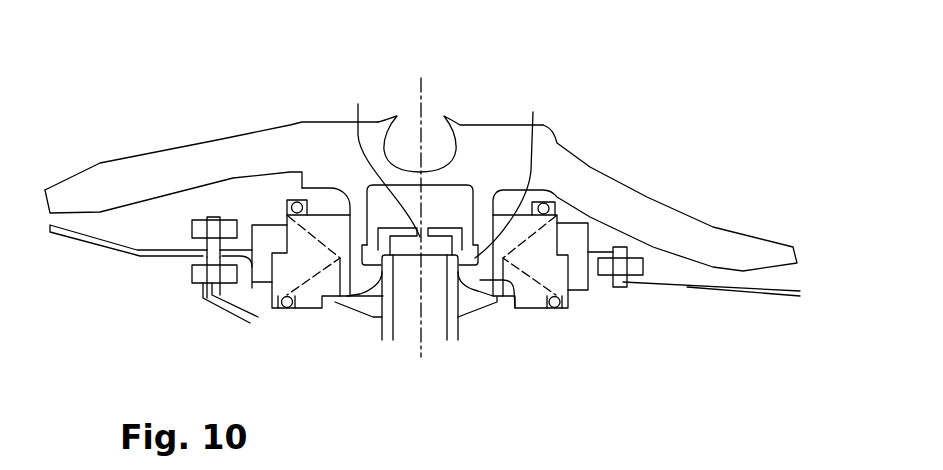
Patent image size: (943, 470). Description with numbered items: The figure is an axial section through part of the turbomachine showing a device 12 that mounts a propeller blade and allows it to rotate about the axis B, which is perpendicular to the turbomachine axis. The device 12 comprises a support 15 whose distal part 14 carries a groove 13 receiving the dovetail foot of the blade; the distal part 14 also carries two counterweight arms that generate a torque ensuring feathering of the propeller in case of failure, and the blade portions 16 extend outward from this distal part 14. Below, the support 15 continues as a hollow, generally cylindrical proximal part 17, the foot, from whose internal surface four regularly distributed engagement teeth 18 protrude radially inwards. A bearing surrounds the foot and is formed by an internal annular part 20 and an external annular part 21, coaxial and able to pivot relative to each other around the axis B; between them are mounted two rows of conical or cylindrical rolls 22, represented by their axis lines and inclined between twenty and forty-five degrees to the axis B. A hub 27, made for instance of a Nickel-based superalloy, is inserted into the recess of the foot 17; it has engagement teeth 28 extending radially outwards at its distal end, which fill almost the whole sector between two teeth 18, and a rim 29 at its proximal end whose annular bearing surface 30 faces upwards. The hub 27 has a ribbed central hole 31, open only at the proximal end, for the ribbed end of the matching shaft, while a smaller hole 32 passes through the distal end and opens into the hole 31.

The axis B is at (422, 76).
The device 12 is at (538, 332).
The groove 13 is at (436, 113).
The distal part 14 is at (505, 152).
The support 15 is at (460, 117).
The blade 16 is at (178, 170).
The proximal part 17 is at (350, 230).
The engagement teeth 18 is at (512, 300).
The internal annular part 20 is at (327, 285).
The external annular part 21 is at (262, 283).
The rolls 22 is at (535, 280).
The hub 27 is at (449, 362).
The engagement teeth 28 is at (510, 174).
The rim 29 is at (493, 307).
The annular bearing surface 30 is at (503, 300).
The central hole 31 is at (402, 352).
The hole 32 is at (383, 159).